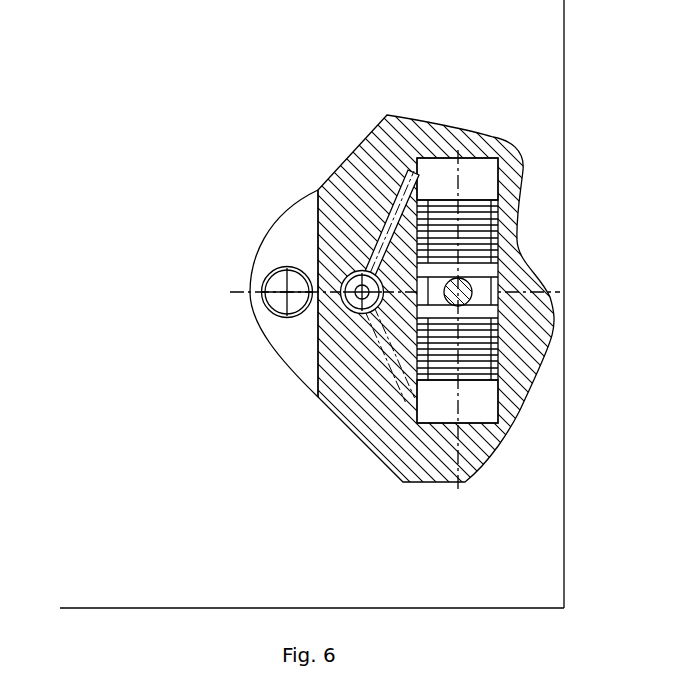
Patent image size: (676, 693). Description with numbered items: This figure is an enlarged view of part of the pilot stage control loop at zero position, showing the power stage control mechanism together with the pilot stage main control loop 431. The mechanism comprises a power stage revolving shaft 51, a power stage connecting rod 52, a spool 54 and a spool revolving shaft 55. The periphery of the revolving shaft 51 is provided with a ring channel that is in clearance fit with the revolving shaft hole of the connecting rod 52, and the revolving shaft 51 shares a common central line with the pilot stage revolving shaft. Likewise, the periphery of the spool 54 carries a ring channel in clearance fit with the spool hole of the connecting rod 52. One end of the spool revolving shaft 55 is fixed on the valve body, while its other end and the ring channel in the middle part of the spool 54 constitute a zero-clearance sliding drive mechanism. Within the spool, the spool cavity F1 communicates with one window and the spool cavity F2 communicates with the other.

The power stage revolving shaft 51 is at (283, 292).
The pilot stage main control loop 431 is at (362, 288).
The spool revolving shaft 55 is at (452, 278).
The spool 54 is at (443, 352).
The power stage connecting rod 52 is at (443, 452).
The spool cavity F1 is at (518, 61).
The spool cavity F2 is at (475, 400).